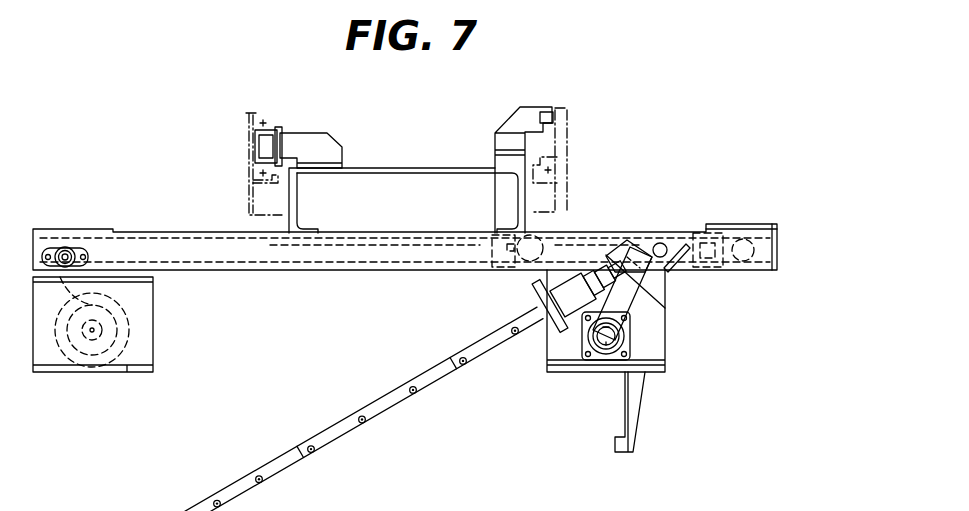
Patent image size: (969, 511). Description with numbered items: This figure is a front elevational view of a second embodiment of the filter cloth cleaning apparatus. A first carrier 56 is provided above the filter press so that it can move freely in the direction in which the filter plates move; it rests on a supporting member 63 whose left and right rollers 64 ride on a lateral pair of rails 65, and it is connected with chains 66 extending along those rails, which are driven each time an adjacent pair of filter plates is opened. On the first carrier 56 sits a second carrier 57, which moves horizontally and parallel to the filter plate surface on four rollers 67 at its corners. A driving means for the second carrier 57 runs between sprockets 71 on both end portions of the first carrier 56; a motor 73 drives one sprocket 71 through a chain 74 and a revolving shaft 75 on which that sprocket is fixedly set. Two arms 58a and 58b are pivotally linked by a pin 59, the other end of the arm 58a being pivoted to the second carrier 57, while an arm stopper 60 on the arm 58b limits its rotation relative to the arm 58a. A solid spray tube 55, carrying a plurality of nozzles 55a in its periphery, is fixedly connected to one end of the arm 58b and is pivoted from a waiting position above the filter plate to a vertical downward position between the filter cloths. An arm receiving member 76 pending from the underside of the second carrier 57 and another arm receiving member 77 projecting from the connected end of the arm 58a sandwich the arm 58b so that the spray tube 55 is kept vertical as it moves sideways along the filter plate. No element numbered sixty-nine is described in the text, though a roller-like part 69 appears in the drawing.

The spray tube 55 is at (322, 432).
The nozzles 55a is at (264, 481).
The first carrier 56 is at (163, 233).
The second carrier 57 is at (666, 352).
The arm 58a is at (655, 285).
The arm 58b is at (645, 312).
The pin 59 is at (657, 244).
The arm stopper 60 is at (650, 283).
The supporting member 63 is at (433, 168).
The rollers 64 is at (262, 143).
The rails 65 is at (247, 167).
The chains 66 is at (262, 124).
The rollers 67 is at (511, 252).
The roller 69 is at (485, 242).
The sprockets 71 is at (767, 268).
The motor 73 is at (118, 320).
The chain 74 is at (105, 292).
The revolving shaft 75 is at (67, 247).
The arm receiving member 76 is at (638, 406).
The arm receiving member 77 is at (684, 246).